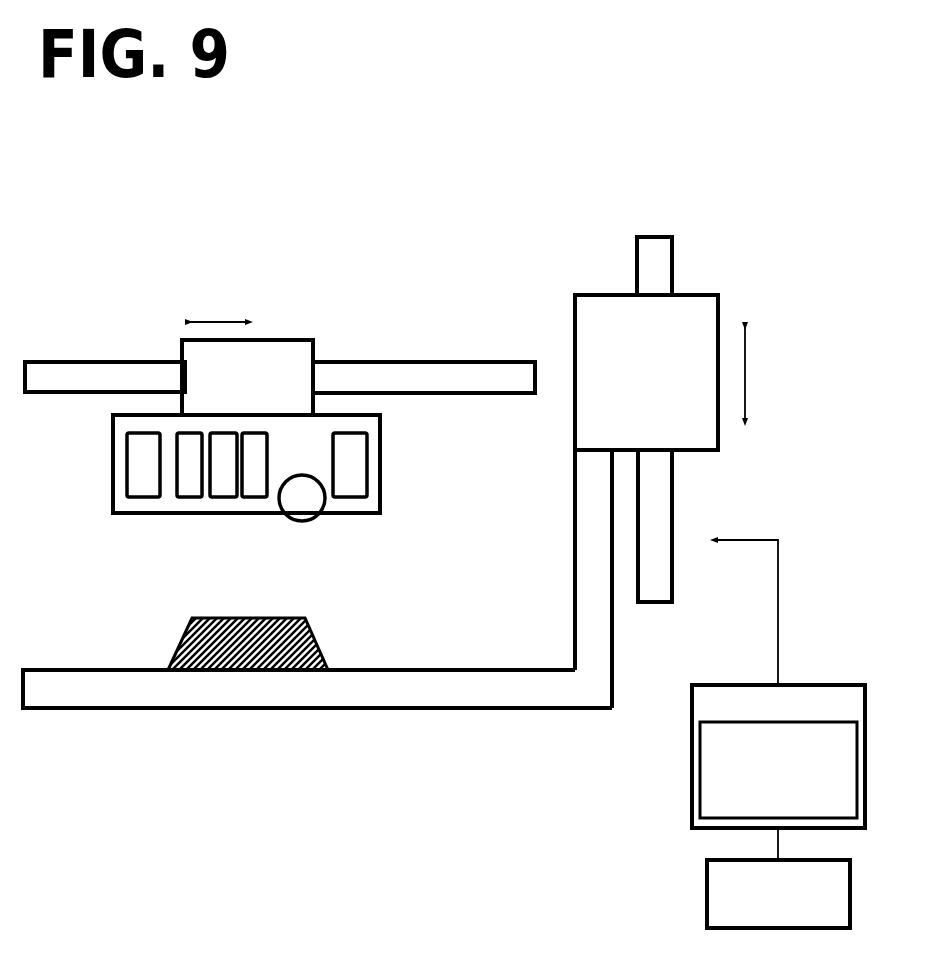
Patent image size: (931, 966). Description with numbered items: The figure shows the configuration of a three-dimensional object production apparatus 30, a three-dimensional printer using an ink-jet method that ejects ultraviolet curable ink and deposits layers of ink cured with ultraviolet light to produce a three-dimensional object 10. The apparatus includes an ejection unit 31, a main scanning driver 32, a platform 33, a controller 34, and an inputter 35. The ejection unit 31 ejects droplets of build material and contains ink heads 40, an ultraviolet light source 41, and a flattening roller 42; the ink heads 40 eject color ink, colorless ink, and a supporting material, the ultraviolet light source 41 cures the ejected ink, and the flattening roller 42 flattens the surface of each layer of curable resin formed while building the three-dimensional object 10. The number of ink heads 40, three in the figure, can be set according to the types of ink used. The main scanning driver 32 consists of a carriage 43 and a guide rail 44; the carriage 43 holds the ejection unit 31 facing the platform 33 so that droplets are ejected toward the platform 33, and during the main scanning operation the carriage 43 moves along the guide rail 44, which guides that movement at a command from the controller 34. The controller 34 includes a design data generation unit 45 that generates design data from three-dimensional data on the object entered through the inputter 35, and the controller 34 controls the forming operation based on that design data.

The three-dimensional object 10 is at (308, 622).
The three-dimensional object production apparatus 30 is at (507, 240).
The ejection unit 31 is at (72, 458).
The main scanning driver 32 is at (368, 281).
The platform 33 is at (340, 700).
The controller 34 is at (692, 745).
The inputter 35 is at (707, 895).
The ink head 40 is at (222, 514).
The ultraviolet light source 41 is at (140, 500).
The flattening roller 42 is at (296, 512).
The carriage 43 is at (294, 358).
The guide rail 44 is at (352, 372).
The design data generation unit 45 is at (700, 775).